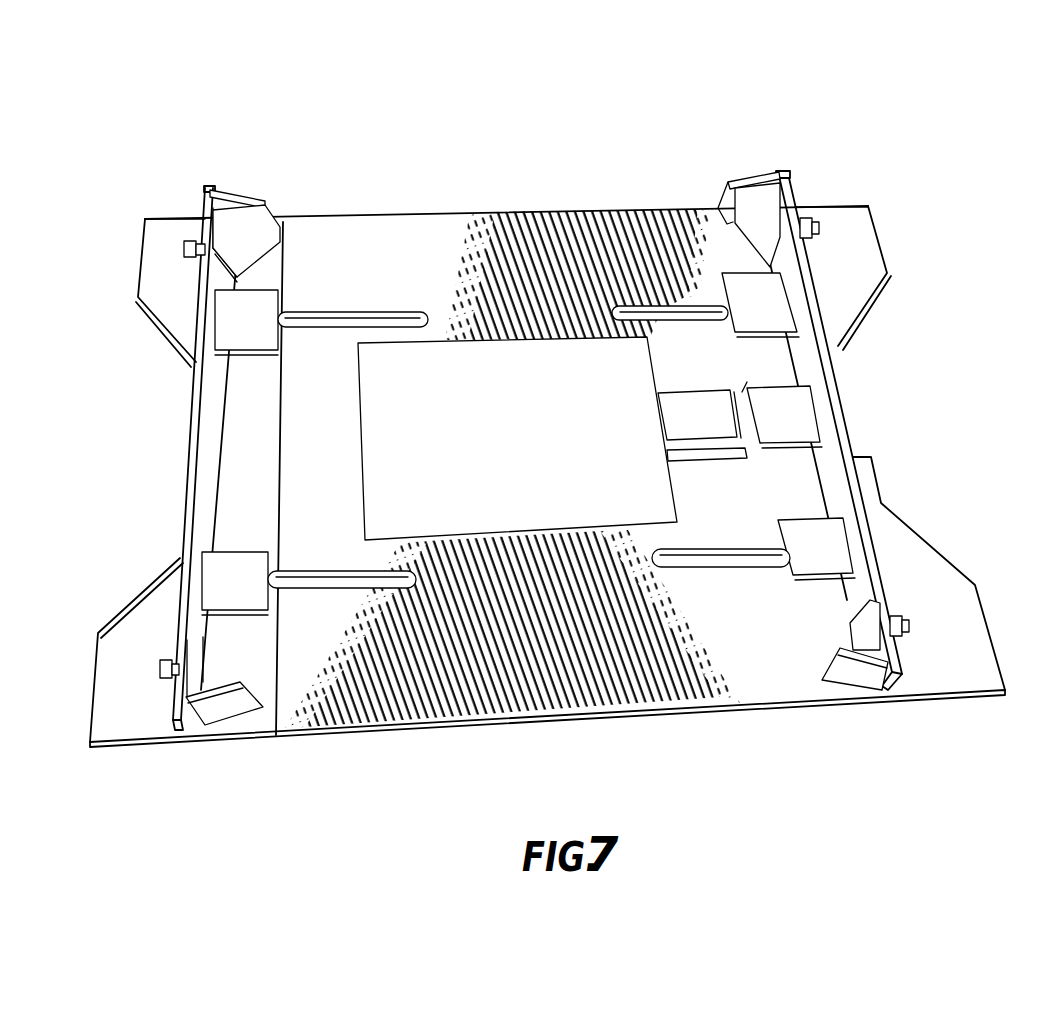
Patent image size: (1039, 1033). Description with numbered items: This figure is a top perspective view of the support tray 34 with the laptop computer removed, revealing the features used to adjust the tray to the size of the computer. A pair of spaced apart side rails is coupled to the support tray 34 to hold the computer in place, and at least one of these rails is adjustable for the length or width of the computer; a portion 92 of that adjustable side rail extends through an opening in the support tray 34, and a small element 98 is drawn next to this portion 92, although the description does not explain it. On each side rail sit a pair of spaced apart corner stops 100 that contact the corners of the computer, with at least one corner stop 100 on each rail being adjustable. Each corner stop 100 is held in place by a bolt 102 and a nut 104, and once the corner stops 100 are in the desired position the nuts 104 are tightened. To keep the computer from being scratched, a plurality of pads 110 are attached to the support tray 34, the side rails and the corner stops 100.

The support tray 34 is at (563, 773).
The portion of the adjustable side rail 92 is at (745, 393).
The pin 98 is at (722, 452).
The corner stop 100 is at (257, 193).
The bolt 102 is at (185, 248).
The nut 104 is at (197, 263).
The pad 110 is at (247, 228).